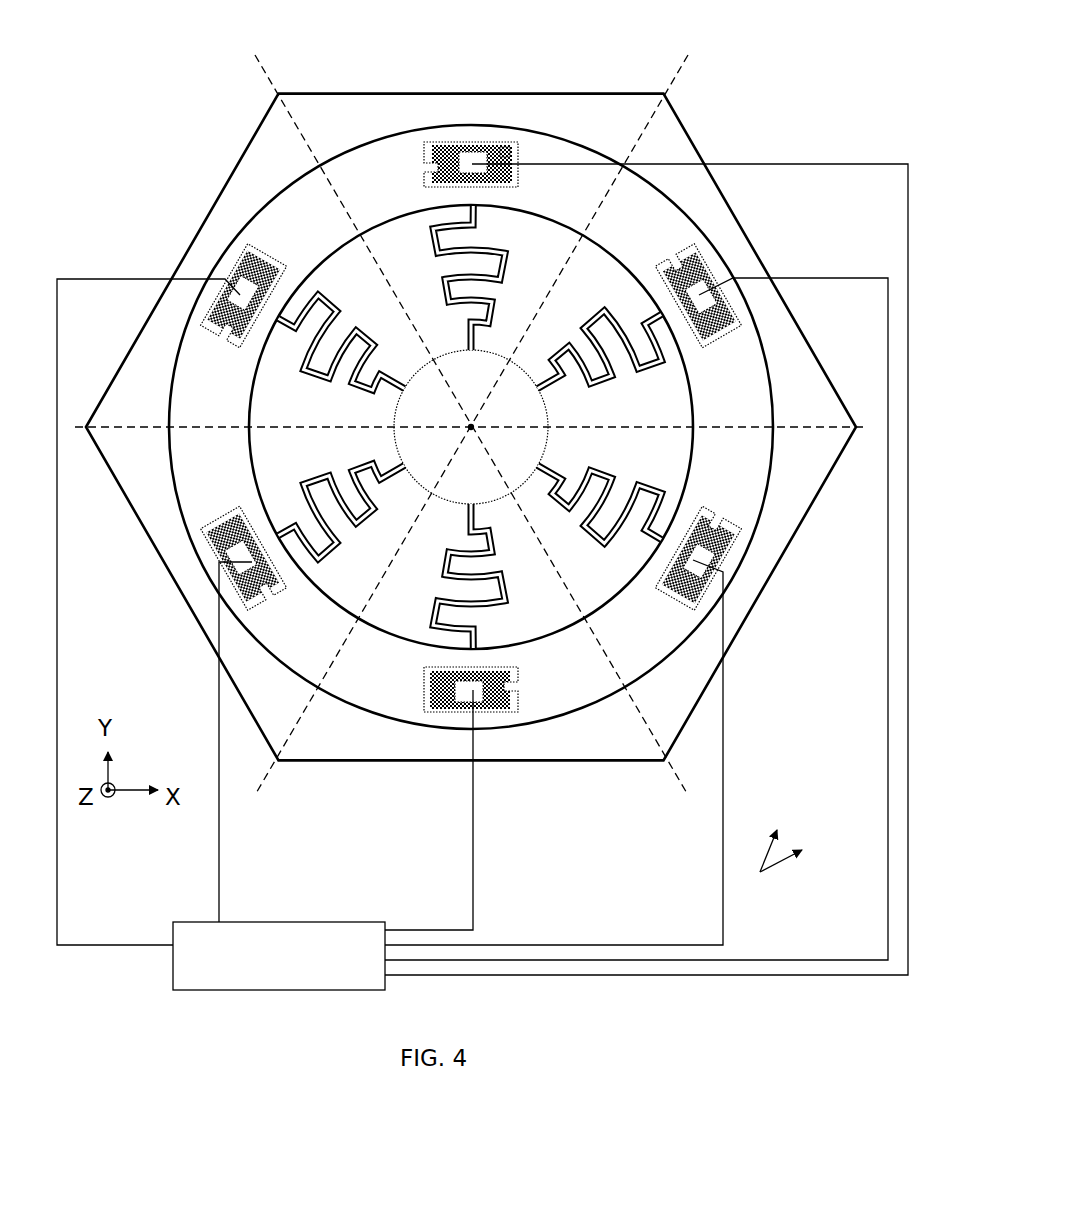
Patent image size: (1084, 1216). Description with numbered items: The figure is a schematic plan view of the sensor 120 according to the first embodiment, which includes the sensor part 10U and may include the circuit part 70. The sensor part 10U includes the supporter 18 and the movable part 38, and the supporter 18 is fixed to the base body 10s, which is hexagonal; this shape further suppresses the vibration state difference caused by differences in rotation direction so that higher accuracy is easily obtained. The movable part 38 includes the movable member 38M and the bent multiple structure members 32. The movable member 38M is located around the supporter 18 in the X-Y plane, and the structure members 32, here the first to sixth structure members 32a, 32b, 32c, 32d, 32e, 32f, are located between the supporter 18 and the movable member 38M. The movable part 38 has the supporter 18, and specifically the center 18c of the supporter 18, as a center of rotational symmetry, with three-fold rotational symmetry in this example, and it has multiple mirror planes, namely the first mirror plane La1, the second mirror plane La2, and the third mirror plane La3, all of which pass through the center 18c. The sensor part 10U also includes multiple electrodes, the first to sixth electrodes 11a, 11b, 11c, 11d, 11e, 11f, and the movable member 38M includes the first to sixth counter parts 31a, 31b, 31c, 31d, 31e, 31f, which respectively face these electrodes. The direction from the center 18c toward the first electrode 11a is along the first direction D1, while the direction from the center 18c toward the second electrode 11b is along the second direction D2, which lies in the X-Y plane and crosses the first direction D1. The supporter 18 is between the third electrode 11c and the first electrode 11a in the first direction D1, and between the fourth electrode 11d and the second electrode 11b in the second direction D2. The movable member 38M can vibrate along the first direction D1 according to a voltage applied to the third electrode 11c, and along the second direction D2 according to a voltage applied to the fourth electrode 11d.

The base body 10s is at (312, 93).
The sensor part 10U is at (766, 72).
The sensor 120 is at (888, 88).
The movable part 38 is at (592, 126).
The movable member 38M is at (530, 146).
The structure members 32 is at (412, 232).
The first structure member 32a is at (512, 255).
The second structure member 32b is at (616, 376).
The third structure member 32c is at (602, 480).
The fourth structure member 32d is at (505, 602).
The fifth structure member 32e is at (372, 540).
The sixth structure member 32f is at (322, 372).
The first counter part 31a is at (645, 505).
The second counter part 31b is at (636, 565).
The third counter part 31c is at (459, 798).
The fourth counter part 31d is at (185, 714).
The fifth counter part 31e is at (620, 725).
The sixth counter part 31f is at (174, 562).
The first electrode 11a is at (498, 152).
The second electrode 11b is at (705, 278).
The third electrode 11c is at (482, 702).
The fourth electrode 11d is at (215, 565).
The fifth electrode 11e is at (690, 545).
The sixth electrode 11f is at (216, 300).
The supporter 18 is at (457, 486).
The center 18c is at (475, 430).
The circuit part 70 is at (173, 944).
The first mirror plane La1 is at (660, 776).
The second mirror plane La2 is at (826, 425).
The third mirror plane La3 is at (282, 776).
The first direction D1 is at (780, 833).
The second direction D2 is at (800, 856).